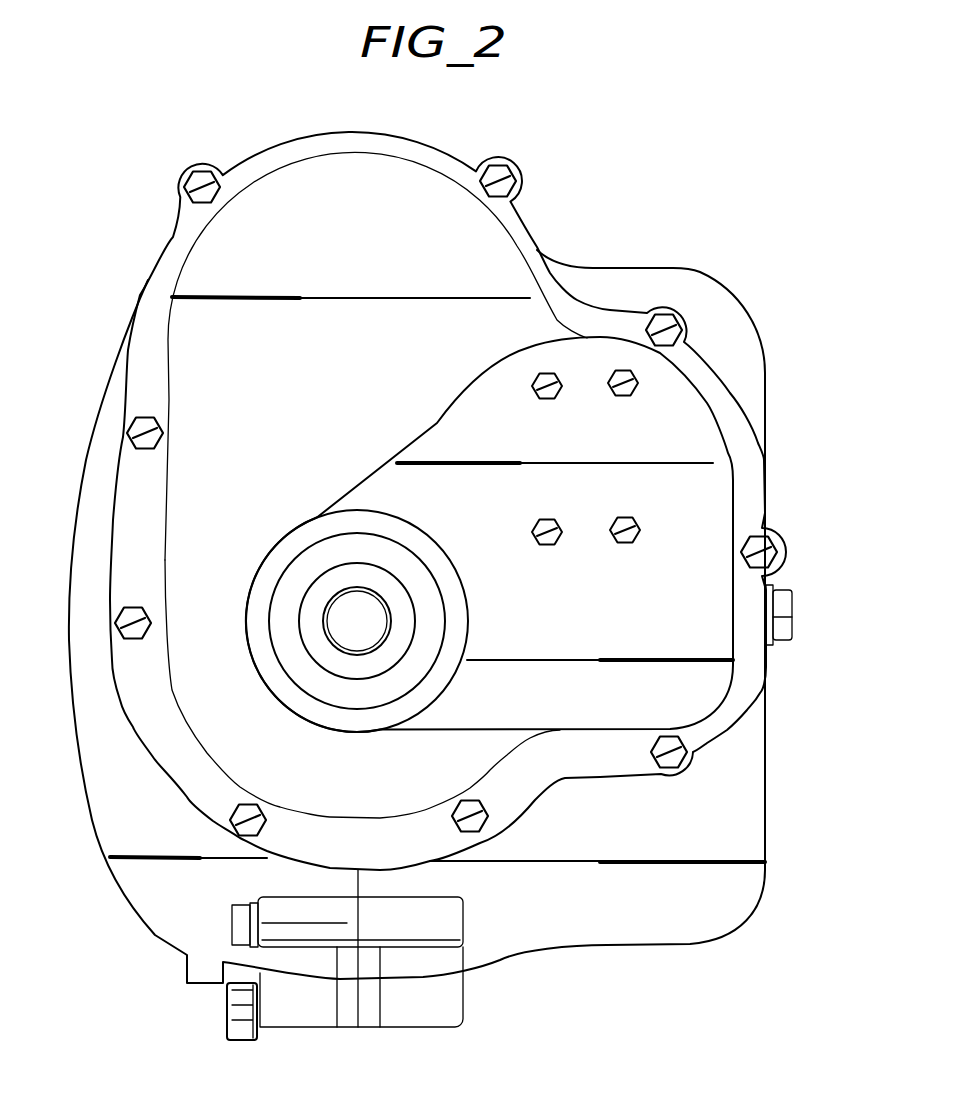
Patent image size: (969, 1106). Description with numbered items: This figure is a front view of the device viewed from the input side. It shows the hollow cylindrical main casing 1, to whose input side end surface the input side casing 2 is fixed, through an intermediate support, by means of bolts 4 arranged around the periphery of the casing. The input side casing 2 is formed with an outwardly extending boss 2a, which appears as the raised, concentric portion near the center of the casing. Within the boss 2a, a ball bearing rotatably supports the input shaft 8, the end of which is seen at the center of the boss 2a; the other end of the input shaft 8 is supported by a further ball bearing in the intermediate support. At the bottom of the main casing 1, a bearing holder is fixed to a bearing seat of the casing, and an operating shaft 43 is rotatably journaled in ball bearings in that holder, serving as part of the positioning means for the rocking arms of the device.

The main casing 1 is at (93, 812).
The input side casing 2 is at (700, 493).
The boss 2a is at (292, 713).
The bolts 4 is at (666, 318).
The input shaft 8 is at (342, 608).
The operating shaft 43 is at (235, 1028).